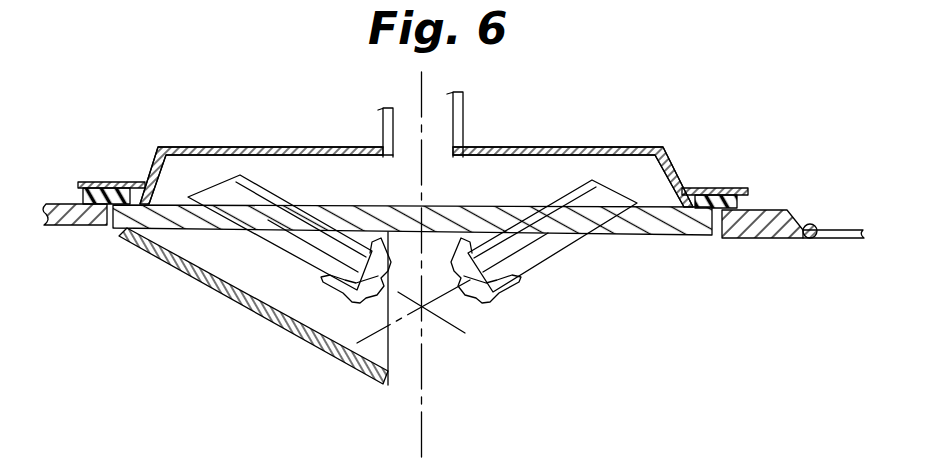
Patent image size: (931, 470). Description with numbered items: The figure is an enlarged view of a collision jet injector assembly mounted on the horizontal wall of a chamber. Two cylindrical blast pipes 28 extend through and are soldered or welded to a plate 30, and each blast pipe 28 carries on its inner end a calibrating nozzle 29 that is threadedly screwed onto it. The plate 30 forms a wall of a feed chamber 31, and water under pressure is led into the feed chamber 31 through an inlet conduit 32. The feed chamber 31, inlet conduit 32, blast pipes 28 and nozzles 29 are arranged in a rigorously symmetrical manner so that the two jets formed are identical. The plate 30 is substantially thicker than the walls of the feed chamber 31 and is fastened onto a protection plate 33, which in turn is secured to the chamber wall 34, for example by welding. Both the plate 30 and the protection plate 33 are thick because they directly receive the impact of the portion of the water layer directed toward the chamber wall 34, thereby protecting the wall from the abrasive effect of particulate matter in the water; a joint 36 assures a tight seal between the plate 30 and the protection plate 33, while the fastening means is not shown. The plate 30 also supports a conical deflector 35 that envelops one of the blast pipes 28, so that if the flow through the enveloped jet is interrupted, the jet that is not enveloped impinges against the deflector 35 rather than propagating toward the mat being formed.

The blast pipe 28 is at (296, 251).
The calibrating nozzle 29 is at (358, 300).
The plate 30 is at (675, 226).
The feed chamber 31 is at (511, 173).
The inlet conduit 32 is at (440, 115).
The protection plate 33 is at (72, 217).
The chamber wall 34 is at (843, 236).
The conical deflector 35 is at (263, 304).
The joint 36 is at (75, 198).